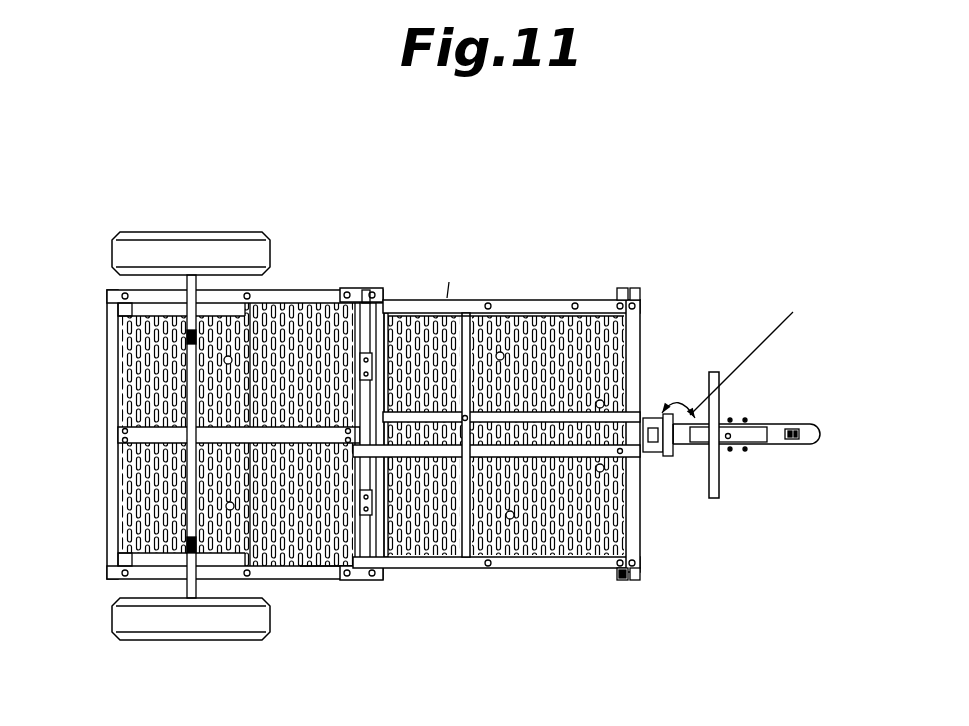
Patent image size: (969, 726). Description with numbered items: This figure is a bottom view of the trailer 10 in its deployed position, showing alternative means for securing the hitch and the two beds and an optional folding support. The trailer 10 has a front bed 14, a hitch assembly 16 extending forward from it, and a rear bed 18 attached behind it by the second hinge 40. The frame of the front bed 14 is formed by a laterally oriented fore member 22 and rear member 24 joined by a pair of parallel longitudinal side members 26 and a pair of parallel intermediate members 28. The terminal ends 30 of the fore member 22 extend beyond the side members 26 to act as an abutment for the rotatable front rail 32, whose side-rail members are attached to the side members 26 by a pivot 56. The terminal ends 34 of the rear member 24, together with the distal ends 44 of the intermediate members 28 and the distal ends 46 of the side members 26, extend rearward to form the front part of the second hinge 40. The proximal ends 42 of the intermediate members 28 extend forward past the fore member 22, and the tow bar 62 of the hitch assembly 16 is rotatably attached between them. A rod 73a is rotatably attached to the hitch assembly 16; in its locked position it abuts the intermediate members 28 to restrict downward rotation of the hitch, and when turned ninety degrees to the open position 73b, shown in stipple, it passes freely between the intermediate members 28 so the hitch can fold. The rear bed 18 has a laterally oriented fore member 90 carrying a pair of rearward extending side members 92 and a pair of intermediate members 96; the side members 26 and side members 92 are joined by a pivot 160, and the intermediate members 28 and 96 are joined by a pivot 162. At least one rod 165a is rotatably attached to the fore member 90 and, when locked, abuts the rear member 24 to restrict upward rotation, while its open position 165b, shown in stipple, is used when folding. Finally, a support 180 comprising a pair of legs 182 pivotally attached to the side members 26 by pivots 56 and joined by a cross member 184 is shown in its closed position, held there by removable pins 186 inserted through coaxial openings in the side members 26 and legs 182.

The trailer 10 is at (725, 291).
The front bed 14 is at (473, 299).
The hitch assembly 16 is at (762, 386).
The rear bed 18 is at (107, 343).
The fore member 22 is at (640, 362).
The rear member 24 is at (395, 365).
The side members 26 is at (530, 318).
The intermediate members 28 is at (567, 312).
The terminal ends 30 is at (638, 296).
The front rail 32 is at (625, 573).
The terminal ends 34 is at (385, 300).
The second hinge 40 is at (372, 288).
The proximal ends 42 is at (658, 412).
The distal ends 44 is at (313, 568).
The distal ends 46 is at (355, 292).
The pivot 56 is at (622, 290).
The tow bar 62 is at (700, 407).
The rod 73a is at (672, 460).
The open position 73b is at (715, 455).
The fore member 90 is at (343, 574).
The side members 92 is at (270, 292).
The intermediate members 96 is at (148, 427).
The pivot 160 is at (365, 290).
The pivot 162 is at (362, 335).
The rod 165a is at (378, 380).
The open position 165b is at (362, 355).
The support 180 is at (515, 305).
The legs 182 is at (550, 312).
The cross member 184 is at (463, 365).
The removable pins 186 is at (488, 300).